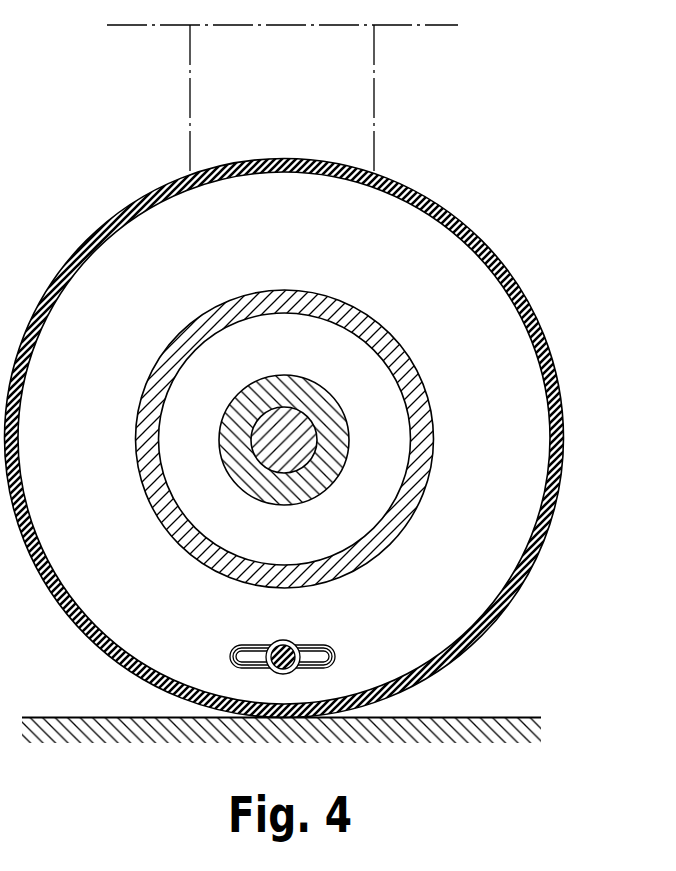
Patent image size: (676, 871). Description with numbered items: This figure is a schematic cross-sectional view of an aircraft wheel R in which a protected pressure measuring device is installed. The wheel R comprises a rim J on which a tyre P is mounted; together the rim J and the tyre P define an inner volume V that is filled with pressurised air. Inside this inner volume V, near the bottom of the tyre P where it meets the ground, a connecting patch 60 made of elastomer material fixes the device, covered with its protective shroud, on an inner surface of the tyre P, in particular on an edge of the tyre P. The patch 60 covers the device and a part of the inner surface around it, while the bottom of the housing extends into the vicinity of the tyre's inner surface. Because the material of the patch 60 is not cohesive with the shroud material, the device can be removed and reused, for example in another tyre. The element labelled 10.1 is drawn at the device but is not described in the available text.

The wheel R is at (523, 244).
The tyre P is at (530, 305).
The rim J is at (416, 377).
The inner volume V is at (482, 471).
The connecting patch 60 is at (340, 656).
The bolt 10.1 is at (297, 645).